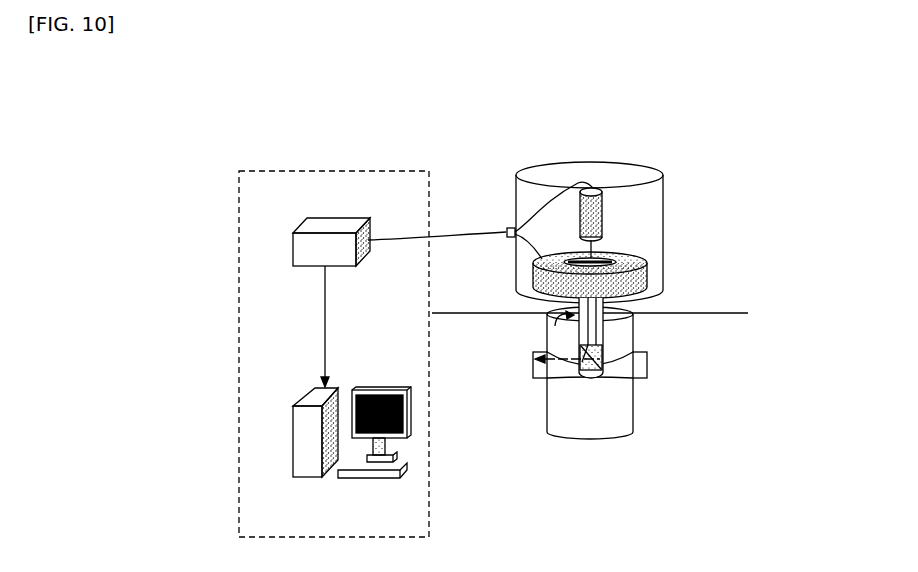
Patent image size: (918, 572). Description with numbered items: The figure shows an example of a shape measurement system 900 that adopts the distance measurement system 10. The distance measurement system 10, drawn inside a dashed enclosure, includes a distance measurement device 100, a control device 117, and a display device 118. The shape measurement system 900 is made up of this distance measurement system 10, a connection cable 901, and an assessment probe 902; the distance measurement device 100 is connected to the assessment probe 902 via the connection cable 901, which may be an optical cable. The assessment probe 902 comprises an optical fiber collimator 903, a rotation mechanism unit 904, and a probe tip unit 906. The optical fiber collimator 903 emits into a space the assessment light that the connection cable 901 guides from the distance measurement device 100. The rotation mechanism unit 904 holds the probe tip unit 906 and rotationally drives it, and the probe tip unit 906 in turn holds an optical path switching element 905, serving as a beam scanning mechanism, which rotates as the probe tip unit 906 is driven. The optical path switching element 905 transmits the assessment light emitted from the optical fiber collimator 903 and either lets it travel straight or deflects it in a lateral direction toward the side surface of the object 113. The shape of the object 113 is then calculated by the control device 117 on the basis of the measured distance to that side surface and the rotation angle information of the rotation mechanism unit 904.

The distance measurement system 10 is at (256, 172).
The distance measurement device 100 is at (325, 221).
The control device 117 is at (300, 462).
The display device 118 is at (375, 386).
The shape measurement system 900 is at (730, 119).
The connection cable 901 is at (441, 237).
The assessment probe 902 is at (667, 200).
The optical fiber collimator 903 is at (604, 193).
The rotation mechanism unit 904 is at (543, 278).
The optical path switching element 905 is at (607, 376).
The probe tip unit 906 is at (607, 345).
The object 113 is at (693, 350).